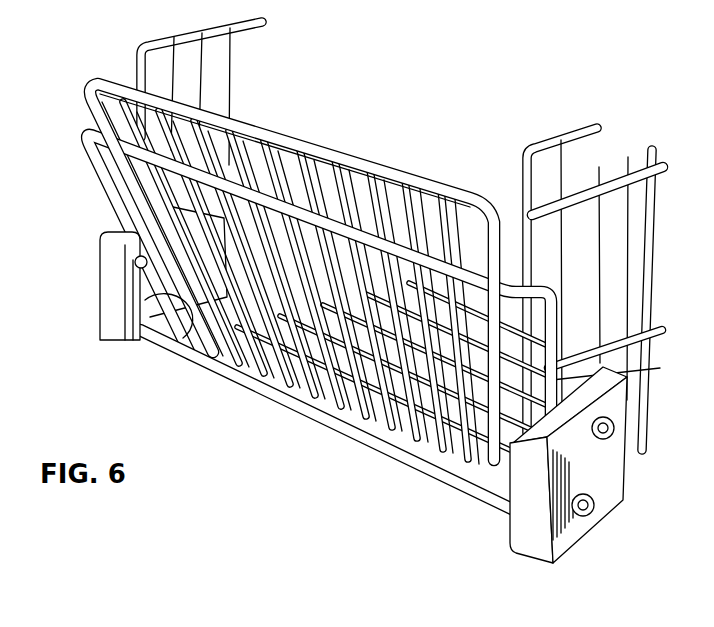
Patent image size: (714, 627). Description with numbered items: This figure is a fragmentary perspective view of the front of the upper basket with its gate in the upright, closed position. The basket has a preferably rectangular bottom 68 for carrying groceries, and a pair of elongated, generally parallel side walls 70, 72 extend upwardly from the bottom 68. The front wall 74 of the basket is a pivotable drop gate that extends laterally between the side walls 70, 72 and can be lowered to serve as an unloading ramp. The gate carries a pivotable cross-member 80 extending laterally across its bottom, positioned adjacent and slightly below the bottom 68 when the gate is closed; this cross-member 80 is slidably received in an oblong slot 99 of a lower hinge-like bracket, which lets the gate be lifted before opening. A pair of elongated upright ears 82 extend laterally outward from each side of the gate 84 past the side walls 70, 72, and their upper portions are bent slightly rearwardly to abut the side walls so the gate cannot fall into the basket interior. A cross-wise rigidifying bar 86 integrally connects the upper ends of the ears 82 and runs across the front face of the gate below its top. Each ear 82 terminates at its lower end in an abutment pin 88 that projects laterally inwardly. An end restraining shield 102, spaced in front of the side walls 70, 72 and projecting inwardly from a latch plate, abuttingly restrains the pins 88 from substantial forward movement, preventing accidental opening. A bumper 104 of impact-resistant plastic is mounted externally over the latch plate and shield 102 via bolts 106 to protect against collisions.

The bottom 68 is at (587, 353).
The side wall 70 is at (650, 187).
The side wall 72 is at (243, 40).
The front wall 74 is at (290, 137).
The pivotable cross-member 80 is at (297, 410).
The ear 82 is at (133, 192).
The gate 84 is at (84, 102).
The rigidifying bar 86 is at (290, 207).
The abutment pin 88 is at (127, 220).
The oblong slot 99 is at (183, 318).
The end restraining shield 102 is at (133, 258).
The bumper 104 is at (120, 337).
The bolt 106 is at (594, 497).